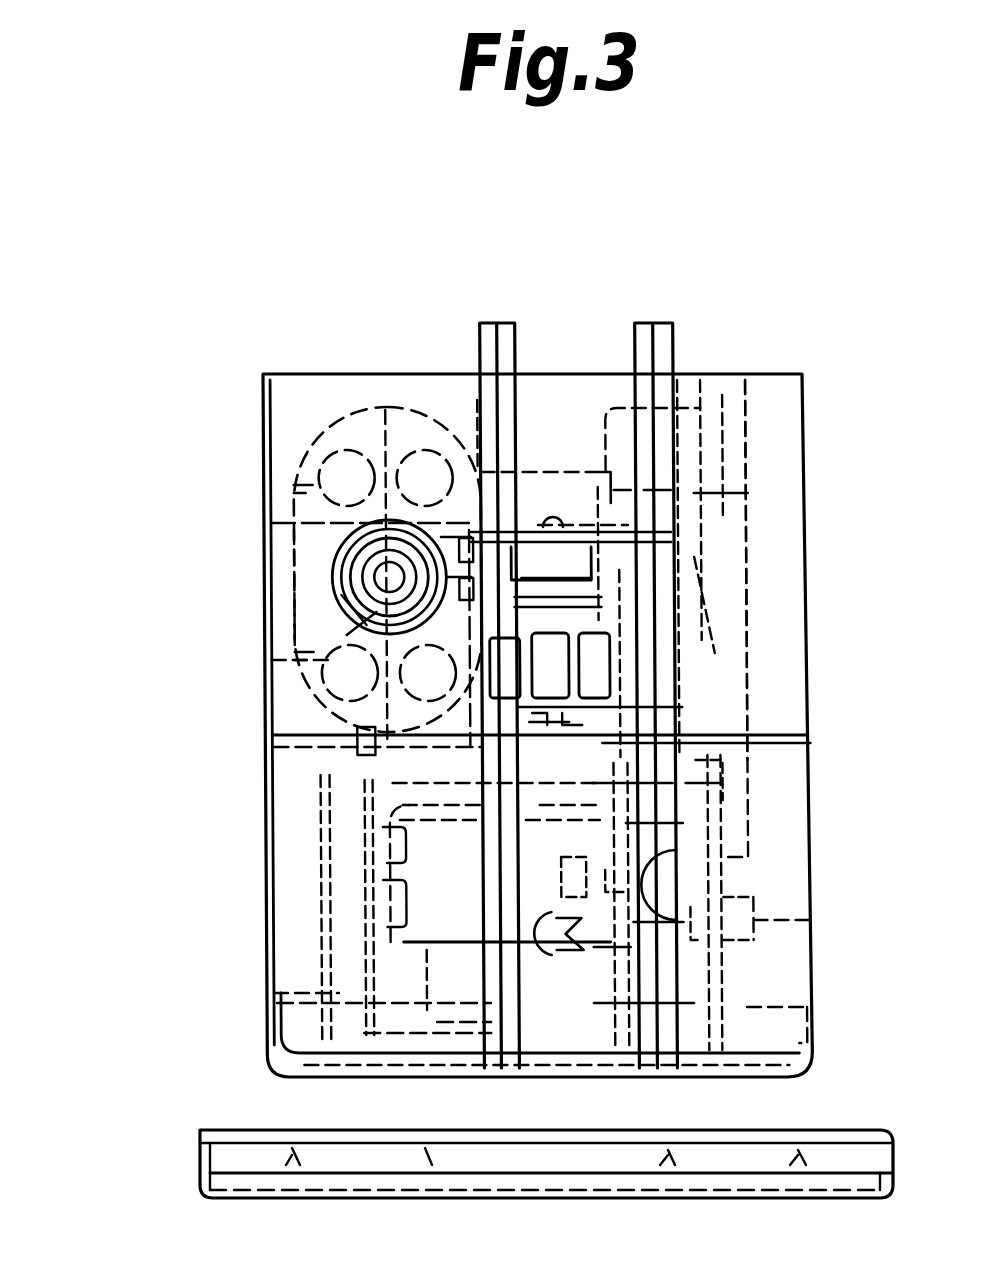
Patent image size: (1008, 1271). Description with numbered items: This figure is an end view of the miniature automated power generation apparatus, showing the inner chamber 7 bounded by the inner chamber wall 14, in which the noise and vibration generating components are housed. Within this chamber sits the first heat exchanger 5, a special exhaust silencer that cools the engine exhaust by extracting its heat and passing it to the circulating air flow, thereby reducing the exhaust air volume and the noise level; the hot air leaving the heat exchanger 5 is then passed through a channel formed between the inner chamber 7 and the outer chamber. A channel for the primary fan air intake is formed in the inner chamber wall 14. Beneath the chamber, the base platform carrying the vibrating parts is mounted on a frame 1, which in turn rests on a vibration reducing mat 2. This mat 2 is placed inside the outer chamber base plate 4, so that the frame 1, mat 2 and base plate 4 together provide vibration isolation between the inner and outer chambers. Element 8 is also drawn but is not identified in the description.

The inner chamber wall 14 is at (300, 413).
The guide post 8 is at (563, 374).
The inner chamber 7 is at (743, 374).
The first heat exchanger 5 is at (300, 490).
The frame 1 is at (475, 1090).
The vibration reducing mat 2 is at (475, 1090).
The outer chamber base plate 4 is at (275, 1112).